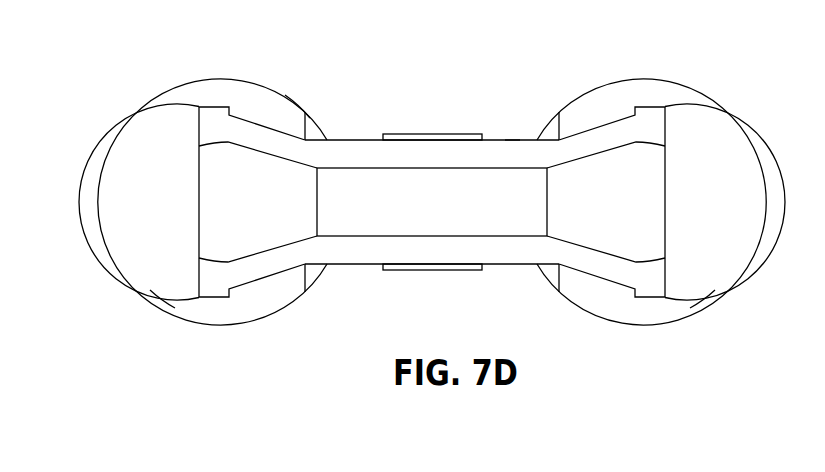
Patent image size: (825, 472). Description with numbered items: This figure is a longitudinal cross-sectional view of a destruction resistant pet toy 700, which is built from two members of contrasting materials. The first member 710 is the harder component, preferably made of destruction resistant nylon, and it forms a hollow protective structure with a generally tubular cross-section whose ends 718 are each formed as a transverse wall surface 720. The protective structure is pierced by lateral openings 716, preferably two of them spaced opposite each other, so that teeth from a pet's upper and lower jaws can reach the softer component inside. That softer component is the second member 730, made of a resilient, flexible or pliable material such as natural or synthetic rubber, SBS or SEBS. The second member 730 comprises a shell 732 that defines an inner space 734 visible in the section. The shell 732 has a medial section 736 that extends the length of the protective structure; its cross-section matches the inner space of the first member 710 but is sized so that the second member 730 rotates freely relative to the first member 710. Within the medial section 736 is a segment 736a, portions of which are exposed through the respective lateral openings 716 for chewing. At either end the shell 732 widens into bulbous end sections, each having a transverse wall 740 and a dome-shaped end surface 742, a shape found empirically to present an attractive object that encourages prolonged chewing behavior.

The destruction resistant pet toy 700 is at (506, 95).
The first member 710 is at (597, 85).
The lateral openings 716 is at (375, 310).
The ends 718 is at (271, 107).
The transverse wall surface 720 is at (220, 103).
The second member 730 is at (702, 110).
The shell 732 is at (513, 153).
The inner space 734 is at (455, 214).
The medial section 736 is at (450, 248).
The segment 736a is at (355, 153).
The transverse wall 740 is at (212, 112).
The dome-shaped end surface 742 is at (165, 298).